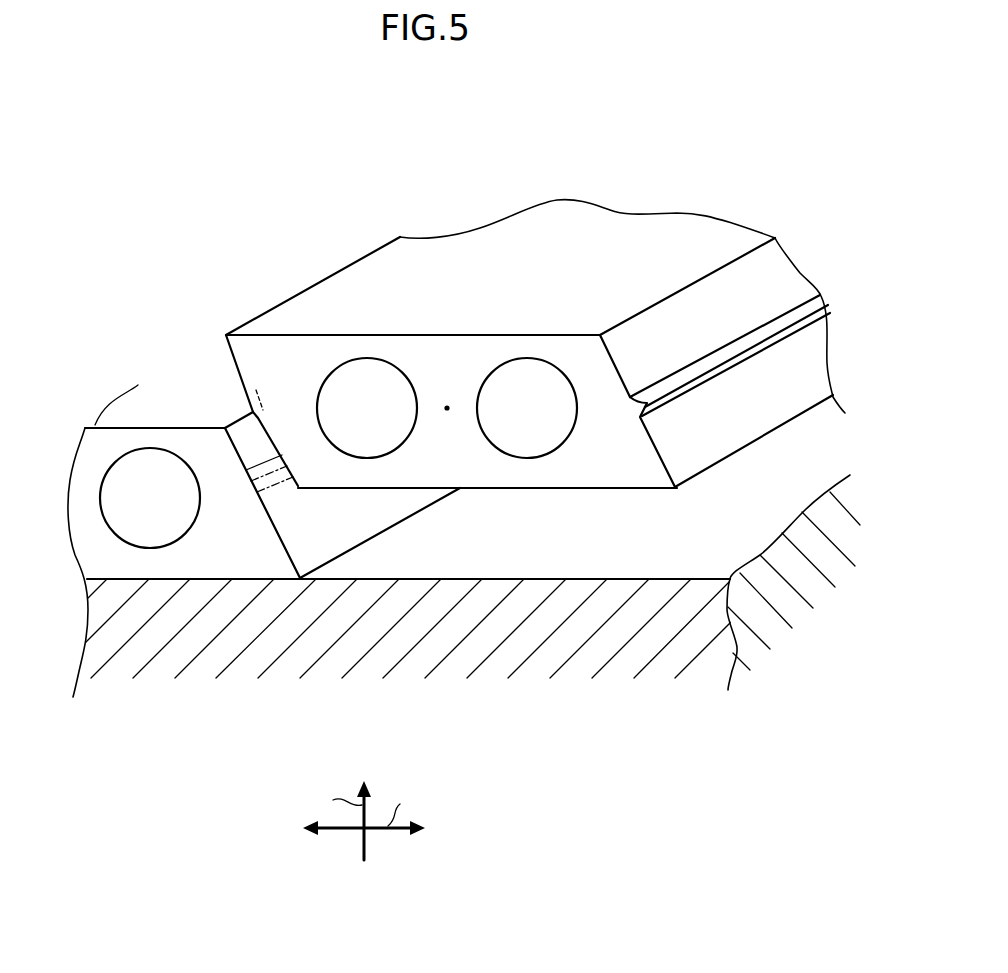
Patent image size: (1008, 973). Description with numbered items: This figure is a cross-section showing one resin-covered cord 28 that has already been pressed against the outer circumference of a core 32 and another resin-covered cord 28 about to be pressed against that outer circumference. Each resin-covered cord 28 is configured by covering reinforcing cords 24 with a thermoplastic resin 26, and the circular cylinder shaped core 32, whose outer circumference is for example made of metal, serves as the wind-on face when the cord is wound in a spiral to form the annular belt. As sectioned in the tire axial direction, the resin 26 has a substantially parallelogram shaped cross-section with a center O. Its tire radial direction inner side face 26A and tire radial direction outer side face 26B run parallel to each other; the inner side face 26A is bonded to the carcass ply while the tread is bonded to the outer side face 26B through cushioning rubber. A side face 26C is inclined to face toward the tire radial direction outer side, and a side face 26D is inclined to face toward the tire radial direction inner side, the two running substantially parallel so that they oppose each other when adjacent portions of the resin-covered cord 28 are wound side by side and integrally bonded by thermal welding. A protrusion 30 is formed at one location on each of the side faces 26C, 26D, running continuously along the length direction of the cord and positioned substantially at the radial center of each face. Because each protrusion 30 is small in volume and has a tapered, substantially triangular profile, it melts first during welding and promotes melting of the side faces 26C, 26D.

The resin-covered cord 28 is at (254, 158).
The thermoplastic resin 26 is at (321, 278).
The tire radial direction inner side face 26A is at (547, 489).
The tire radial direction outer side face 26B is at (517, 270).
The side face 26C is at (657, 353).
The side face 26D is at (245, 377).
The protrusion 30 is at (747, 340).
The reinforcing cord 24 is at (503, 360).
The center O is at (448, 413).
The core 32 is at (663, 548).